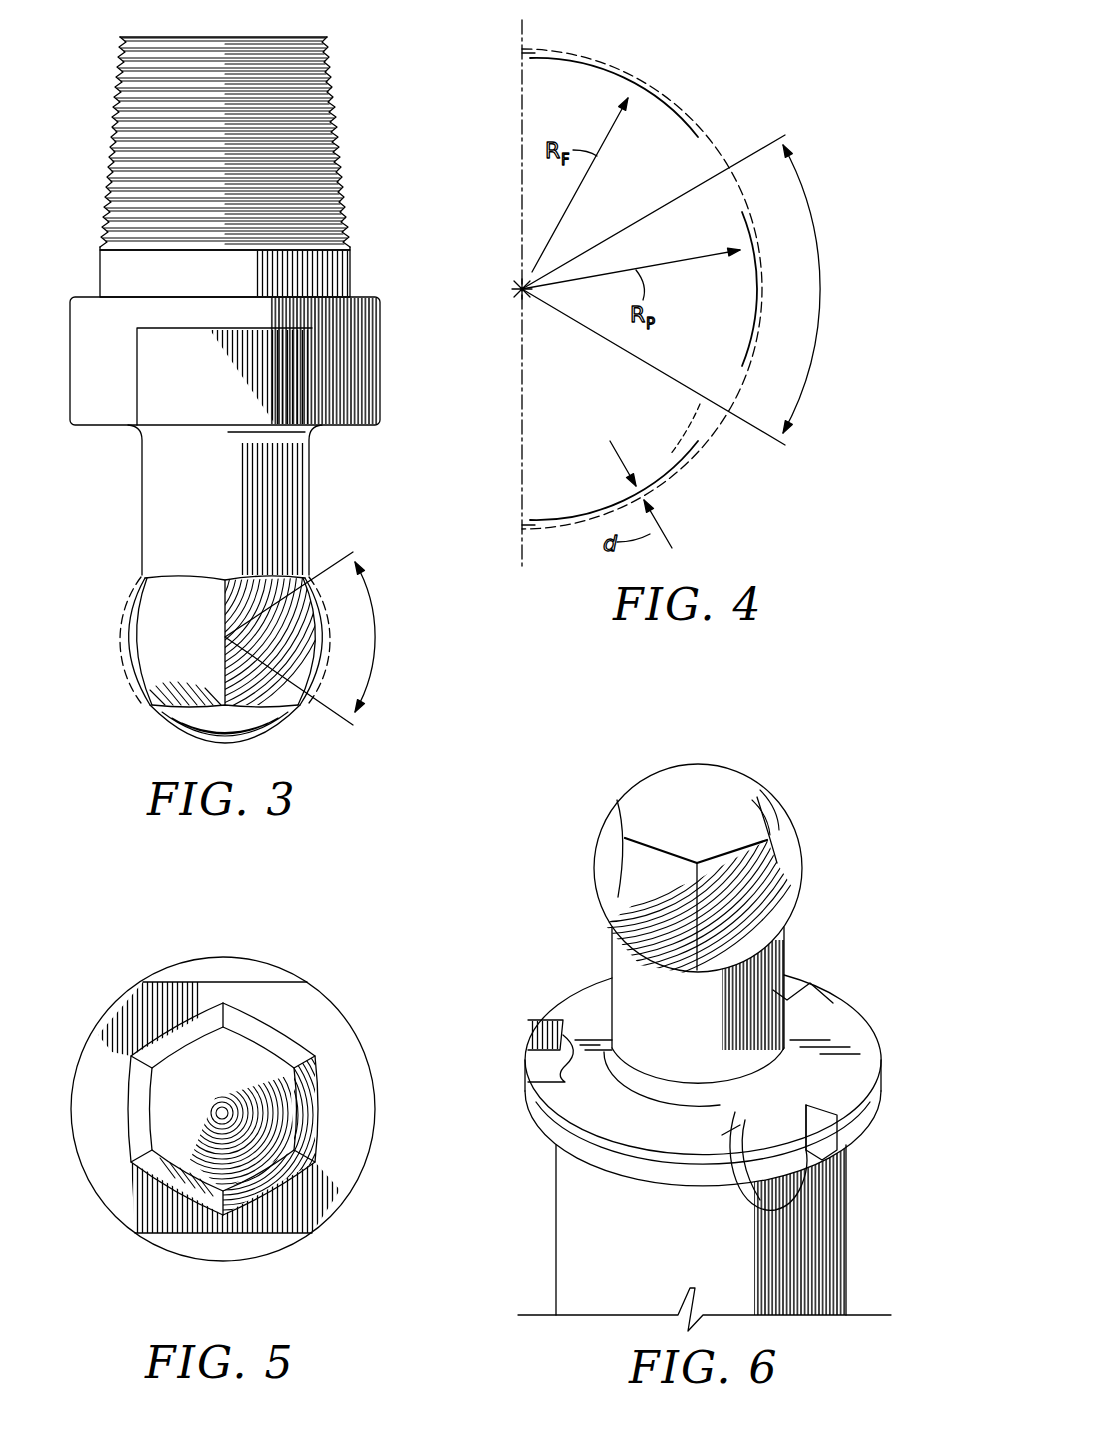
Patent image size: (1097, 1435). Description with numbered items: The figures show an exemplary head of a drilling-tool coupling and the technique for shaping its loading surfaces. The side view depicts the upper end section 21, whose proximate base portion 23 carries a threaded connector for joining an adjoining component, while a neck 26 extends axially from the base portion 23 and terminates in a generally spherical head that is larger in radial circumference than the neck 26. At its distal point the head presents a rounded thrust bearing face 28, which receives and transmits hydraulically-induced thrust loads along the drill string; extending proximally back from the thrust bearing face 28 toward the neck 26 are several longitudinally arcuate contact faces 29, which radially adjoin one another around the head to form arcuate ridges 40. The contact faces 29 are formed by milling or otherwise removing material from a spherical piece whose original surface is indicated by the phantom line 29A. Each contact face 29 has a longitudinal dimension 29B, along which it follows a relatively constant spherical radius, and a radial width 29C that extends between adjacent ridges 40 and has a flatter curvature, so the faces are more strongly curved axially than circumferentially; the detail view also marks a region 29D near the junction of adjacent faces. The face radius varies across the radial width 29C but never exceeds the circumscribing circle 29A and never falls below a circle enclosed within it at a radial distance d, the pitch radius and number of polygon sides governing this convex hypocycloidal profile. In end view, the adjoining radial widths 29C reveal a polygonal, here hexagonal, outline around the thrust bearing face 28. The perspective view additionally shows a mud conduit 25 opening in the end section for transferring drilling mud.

In FIG. 3, the upper end section 21 is at (100, 276).
In FIG. 6, the base portion 23 is at (571, 1228).
In FIG. 6, the mud conduit 25 is at (764, 1190).
In FIG. 6, the neck 26 is at (779, 972).
In FIG. 5, the thrust bearing face 28 is at (235, 1052).
In FIG. 6, the thrust bearing face 28 is at (657, 793).
In FIG. 3, the contact faces 29 is at (124, 616).
In FIG. 4, the contact faces 29 is at (643, 100).
In FIG. 5, the contact faces 29 is at (165, 1037).
In FIG. 6, the contact faces 29 is at (618, 898).
In FIG. 3, the original surface 29A is at (122, 664).
In FIG. 4, the original surface 29A is at (665, 481).
In FIG. 3, the longitudinal dimension 29B is at (376, 637).
In FIG. 4, the radial width 29C is at (822, 294).
In FIG. 4, the transition between faces 29D is at (700, 421).
In FIG. 3, the ridges 40 is at (224, 630).
In FIG. 5, the ridges 40 is at (222, 1000).
In FIG. 6, the ridges 40 is at (613, 855).